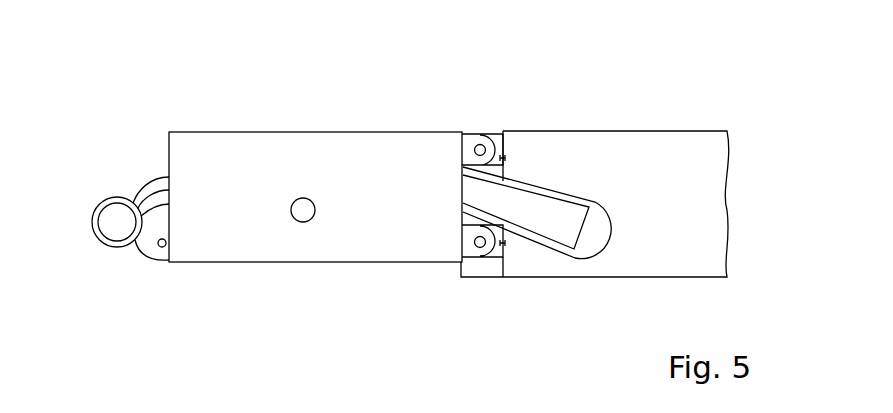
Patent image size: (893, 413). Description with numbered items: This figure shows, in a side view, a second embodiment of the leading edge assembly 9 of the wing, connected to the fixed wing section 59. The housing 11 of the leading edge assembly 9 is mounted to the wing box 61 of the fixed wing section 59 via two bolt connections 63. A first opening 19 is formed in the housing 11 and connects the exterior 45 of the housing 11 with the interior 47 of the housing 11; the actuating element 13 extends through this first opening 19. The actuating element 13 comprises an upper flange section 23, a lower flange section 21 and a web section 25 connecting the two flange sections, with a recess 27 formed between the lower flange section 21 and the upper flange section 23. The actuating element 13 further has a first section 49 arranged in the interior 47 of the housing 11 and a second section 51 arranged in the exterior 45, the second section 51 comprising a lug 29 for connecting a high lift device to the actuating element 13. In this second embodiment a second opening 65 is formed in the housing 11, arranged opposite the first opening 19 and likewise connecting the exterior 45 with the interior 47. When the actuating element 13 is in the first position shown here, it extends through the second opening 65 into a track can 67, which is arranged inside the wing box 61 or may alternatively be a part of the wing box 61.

The leading edge assembly 9 is at (668, 100).
The housing 11 is at (210, 270).
The actuating element 13 is at (145, 197).
The first opening 19 is at (160, 154).
The lower flange section 21 is at (167, 220).
The upper flange section 23 is at (163, 183).
The web section 25 is at (163, 203).
The recess 27 is at (135, 226).
The lug 29 is at (84, 209).
The exterior 45 is at (101, 101).
The interior 47 is at (292, 172).
The first section 49 is at (540, 212).
The second section 51 is at (137, 197).
The fixed wing section 59 is at (637, 264).
The wing box 61 is at (585, 145).
The bolt connections 63 is at (483, 124).
The second opening 65 is at (485, 187).
The track can 67 is at (561, 267).